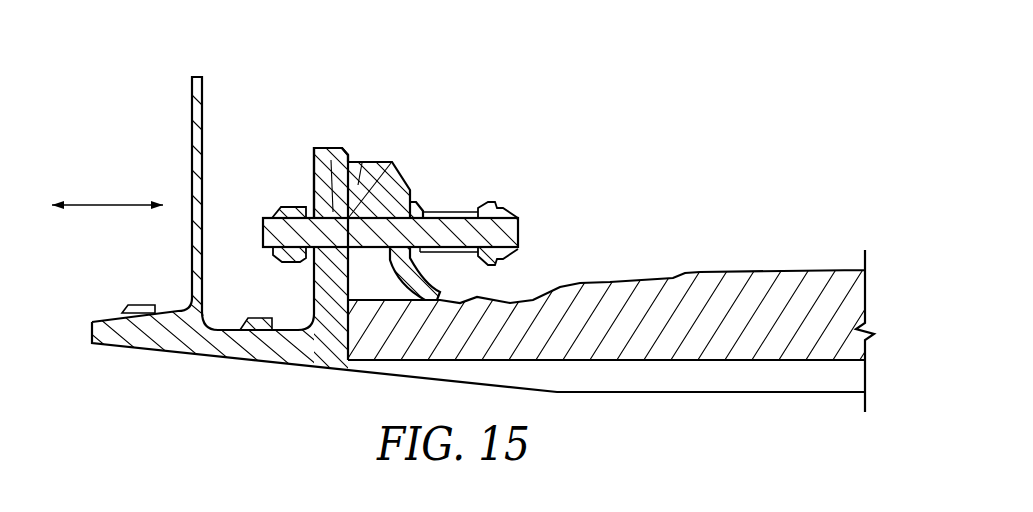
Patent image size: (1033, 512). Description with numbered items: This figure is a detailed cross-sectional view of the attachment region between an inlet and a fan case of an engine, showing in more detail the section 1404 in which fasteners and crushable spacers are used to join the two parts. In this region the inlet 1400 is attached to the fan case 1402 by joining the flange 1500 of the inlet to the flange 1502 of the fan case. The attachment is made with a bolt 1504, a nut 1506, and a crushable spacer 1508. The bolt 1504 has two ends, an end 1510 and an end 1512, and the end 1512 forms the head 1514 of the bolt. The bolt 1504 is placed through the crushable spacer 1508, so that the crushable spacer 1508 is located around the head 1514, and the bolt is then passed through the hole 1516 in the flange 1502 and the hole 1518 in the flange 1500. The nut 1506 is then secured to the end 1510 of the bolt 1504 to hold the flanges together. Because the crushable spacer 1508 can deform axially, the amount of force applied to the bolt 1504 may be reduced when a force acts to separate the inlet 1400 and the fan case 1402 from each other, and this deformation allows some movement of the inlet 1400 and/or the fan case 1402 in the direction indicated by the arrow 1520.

The inlet 1400 is at (98, 320).
The fan case 1402 is at (765, 272).
The section 1404 is at (147, 104).
The flange 1500 is at (318, 148).
The flange 1502 is at (383, 162).
The bolt 1504 is at (520, 218).
The nut 1506 is at (292, 211).
The crushable spacer 1508 is at (452, 262).
The end 1510 is at (268, 232).
The end 1512 is at (496, 206).
The head 1514 is at (520, 247).
The hole 1516 is at (362, 163).
The hole 1518 is at (331, 160).
The arrow 1520 is at (110, 205).